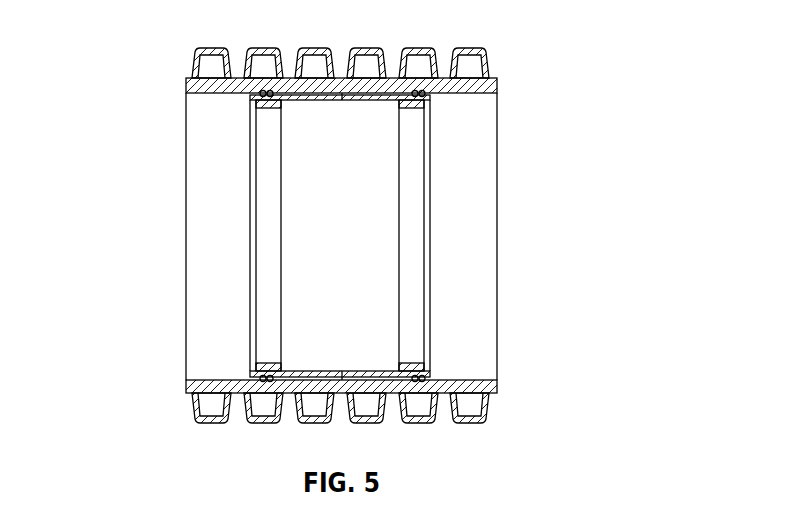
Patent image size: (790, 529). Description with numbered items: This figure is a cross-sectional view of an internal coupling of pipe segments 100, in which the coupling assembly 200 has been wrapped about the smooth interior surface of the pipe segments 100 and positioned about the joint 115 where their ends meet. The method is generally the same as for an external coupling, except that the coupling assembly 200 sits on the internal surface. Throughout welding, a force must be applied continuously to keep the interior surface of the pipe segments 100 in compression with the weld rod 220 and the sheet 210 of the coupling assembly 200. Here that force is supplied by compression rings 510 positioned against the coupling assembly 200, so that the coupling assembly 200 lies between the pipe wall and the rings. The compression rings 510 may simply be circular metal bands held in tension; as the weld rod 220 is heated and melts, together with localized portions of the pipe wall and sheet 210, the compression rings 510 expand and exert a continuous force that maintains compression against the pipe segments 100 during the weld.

The pipe segments 100 is at (196, 142).
The joint 115 is at (342, 380).
The coupling assembly 200 is at (344, 271).
The sheet 210 is at (428, 288).
The weld rod 220 is at (424, 95).
The compression rings 510 is at (267, 238).